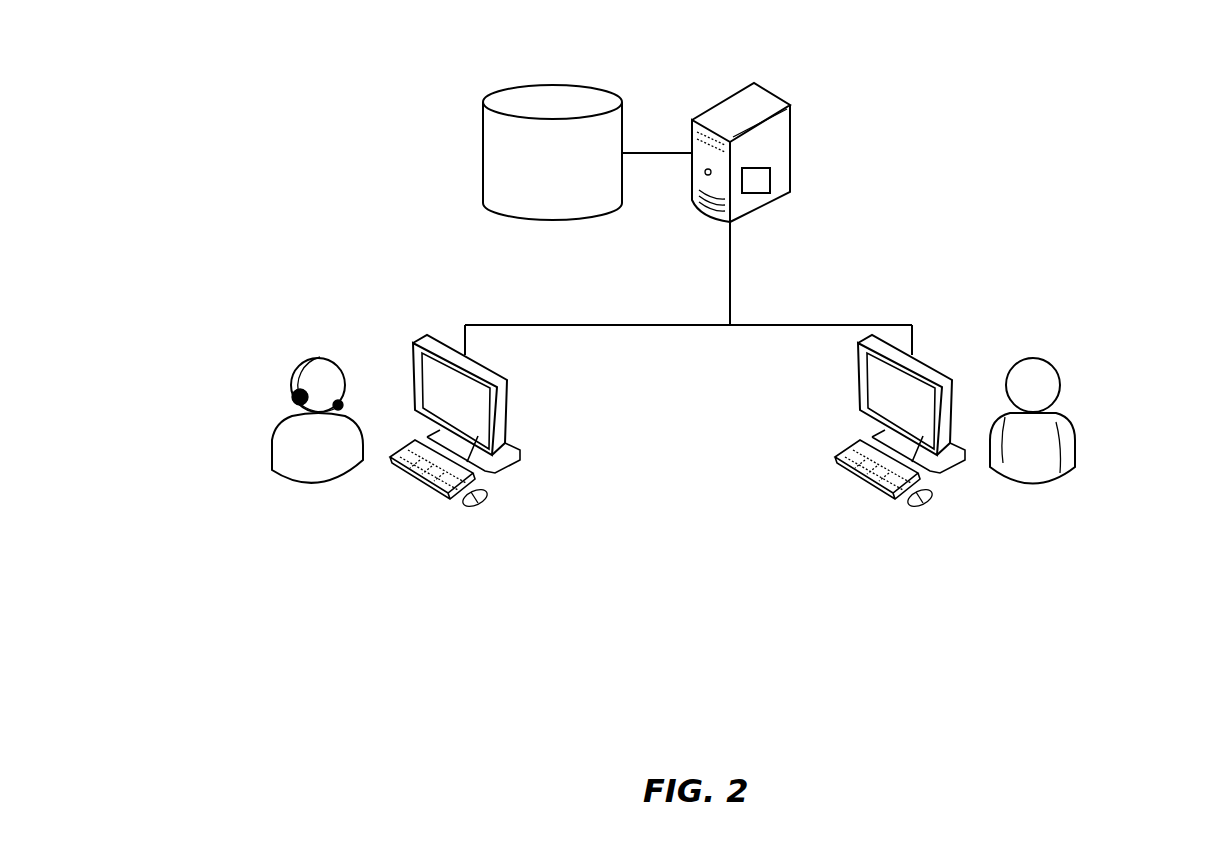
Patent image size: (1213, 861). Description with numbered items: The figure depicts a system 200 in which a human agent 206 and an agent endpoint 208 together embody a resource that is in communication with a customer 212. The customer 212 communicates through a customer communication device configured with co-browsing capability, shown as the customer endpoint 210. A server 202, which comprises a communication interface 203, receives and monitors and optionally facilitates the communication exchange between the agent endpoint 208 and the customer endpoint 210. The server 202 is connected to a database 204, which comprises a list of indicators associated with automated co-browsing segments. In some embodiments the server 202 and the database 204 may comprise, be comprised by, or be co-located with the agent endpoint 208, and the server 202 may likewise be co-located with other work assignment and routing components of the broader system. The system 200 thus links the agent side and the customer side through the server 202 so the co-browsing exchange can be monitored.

The system 200 is at (1105, 83).
The server 202 is at (775, 92).
The communication interface 203 is at (770, 180).
The database 204 is at (598, 84).
The human agent 206 is at (272, 443).
The agent endpoint 208 is at (502, 405).
The customer endpoint 210 is at (860, 375).
The customer 212 is at (1072, 420).